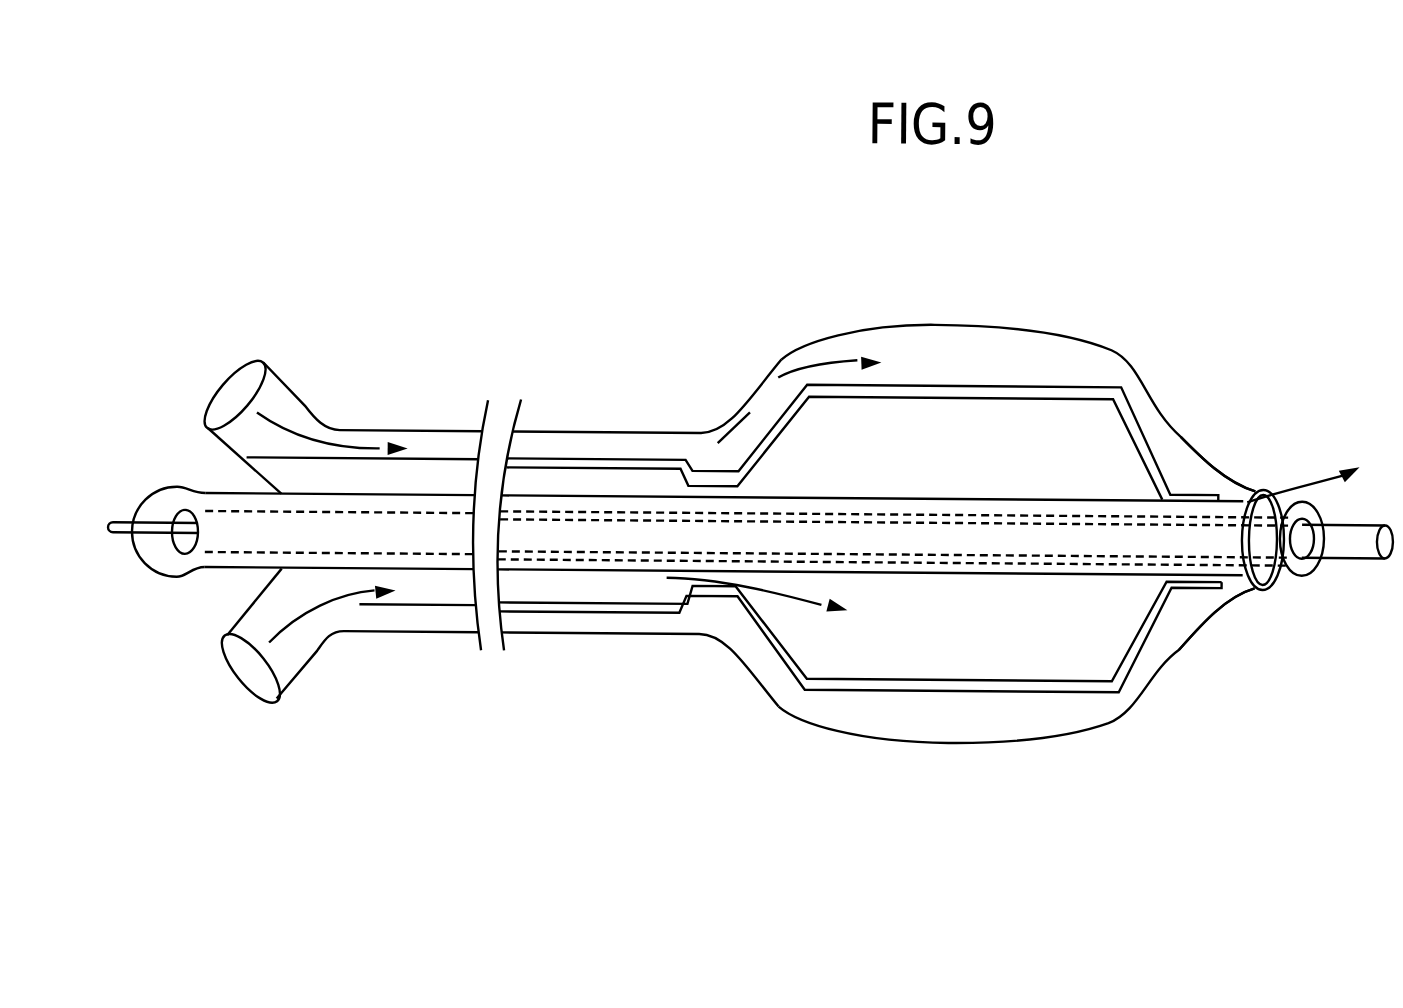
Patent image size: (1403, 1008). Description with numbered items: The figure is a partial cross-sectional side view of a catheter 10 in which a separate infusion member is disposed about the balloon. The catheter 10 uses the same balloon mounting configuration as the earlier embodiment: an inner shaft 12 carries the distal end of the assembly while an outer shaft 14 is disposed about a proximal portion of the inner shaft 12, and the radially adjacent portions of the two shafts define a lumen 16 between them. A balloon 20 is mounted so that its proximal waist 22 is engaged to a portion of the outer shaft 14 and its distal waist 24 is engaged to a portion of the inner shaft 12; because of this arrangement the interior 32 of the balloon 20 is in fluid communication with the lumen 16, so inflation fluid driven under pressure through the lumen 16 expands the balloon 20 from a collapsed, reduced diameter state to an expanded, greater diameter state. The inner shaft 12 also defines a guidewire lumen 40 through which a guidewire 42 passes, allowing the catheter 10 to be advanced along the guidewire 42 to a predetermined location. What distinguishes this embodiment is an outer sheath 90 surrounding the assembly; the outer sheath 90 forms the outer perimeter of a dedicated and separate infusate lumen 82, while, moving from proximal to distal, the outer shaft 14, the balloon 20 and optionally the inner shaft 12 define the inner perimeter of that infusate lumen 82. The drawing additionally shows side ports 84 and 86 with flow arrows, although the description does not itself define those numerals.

The catheter 10 is at (820, 304).
The inner shaft 12 is at (587, 495).
The outer shaft 14 is at (604, 610).
The lumen 16 is at (249, 670).
The balloon 20 is at (1088, 374).
The proximal waist 22 is at (718, 604).
The distal waist 24 is at (1212, 480).
The interior 32 is at (965, 442).
The guidewire lumen 40 is at (894, 555).
The guidewire 42 is at (115, 539).
The infusate lumen 82 is at (235, 395).
The inlet port 84 is at (334, 633).
The outlet port / flow path 86 is at (309, 428).
The outer sheath 90 is at (743, 399).